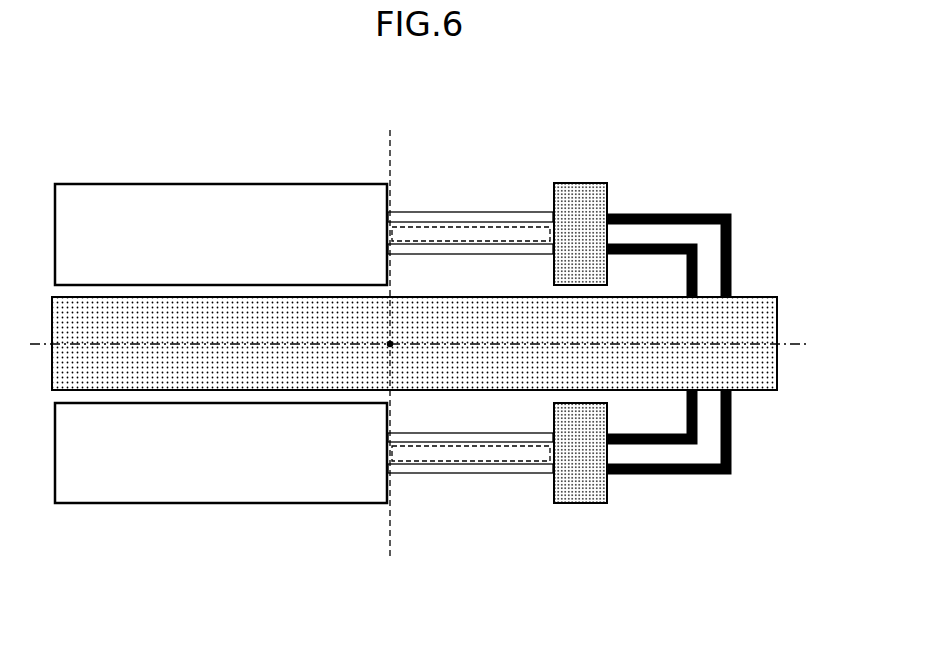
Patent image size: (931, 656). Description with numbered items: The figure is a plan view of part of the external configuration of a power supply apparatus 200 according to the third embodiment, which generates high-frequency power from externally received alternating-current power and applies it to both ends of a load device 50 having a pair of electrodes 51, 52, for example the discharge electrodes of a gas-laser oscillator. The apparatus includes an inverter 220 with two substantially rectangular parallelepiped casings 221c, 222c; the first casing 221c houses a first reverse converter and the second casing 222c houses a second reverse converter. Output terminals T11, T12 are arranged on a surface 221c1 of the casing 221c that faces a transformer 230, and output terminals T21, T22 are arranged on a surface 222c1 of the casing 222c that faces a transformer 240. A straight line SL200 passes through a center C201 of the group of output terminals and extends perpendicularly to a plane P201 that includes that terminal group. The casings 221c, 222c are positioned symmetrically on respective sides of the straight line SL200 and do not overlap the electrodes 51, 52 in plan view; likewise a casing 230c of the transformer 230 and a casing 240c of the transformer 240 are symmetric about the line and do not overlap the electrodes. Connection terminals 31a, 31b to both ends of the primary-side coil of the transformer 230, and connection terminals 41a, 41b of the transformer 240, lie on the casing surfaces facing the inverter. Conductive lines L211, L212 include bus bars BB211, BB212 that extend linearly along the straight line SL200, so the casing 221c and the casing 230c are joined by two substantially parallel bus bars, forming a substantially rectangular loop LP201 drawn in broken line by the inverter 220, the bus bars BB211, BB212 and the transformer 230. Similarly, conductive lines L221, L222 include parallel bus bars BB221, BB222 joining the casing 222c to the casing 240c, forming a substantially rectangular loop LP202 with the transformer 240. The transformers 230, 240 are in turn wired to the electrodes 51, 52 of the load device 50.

The power supply apparatus 200 is at (83, 100).
The inverter 220 is at (221, 310).
The casing 221c is at (190, 190).
The casing 222c is at (175, 500).
The surface 221c1 is at (392, 290).
The surface 222c1 is at (392, 400).
The output terminal T11 is at (397, 207).
The output terminal T12 is at (394, 258).
The output terminal T21 is at (396, 430).
The output terminal T22 is at (396, 482).
The center C201 is at (381, 345).
The plane P201 is at (389, 545).
The conductive line L211 is at (428, 132).
The conductive line L212 is at (502, 132).
The conductive line L221 is at (501, 555).
The conductive line L222 is at (427, 555).
The loop LP201 is at (447, 245).
The loop LP202 is at (447, 452).
The bus bar BB211 is at (430, 220).
The bus bar BB212 is at (518, 250).
The bus bar BB221 is at (518, 440).
The bus bar BB222 is at (431, 473).
The connection terminal 31a is at (547, 208).
The connection terminal 31b is at (548, 256).
The connection terminal 41a is at (548, 431).
The connection terminal 41b is at (548, 480).
The transformer 230 is at (586, 175).
The casing 230c is at (588, 190).
The transformer 240 is at (586, 514).
The casing 240c is at (588, 498).
The straight line SL200 is at (797, 352).
The electrode 51 is at (753, 391).
The electrode 52 is at (666, 429).
The load device 50 is at (699, 399).